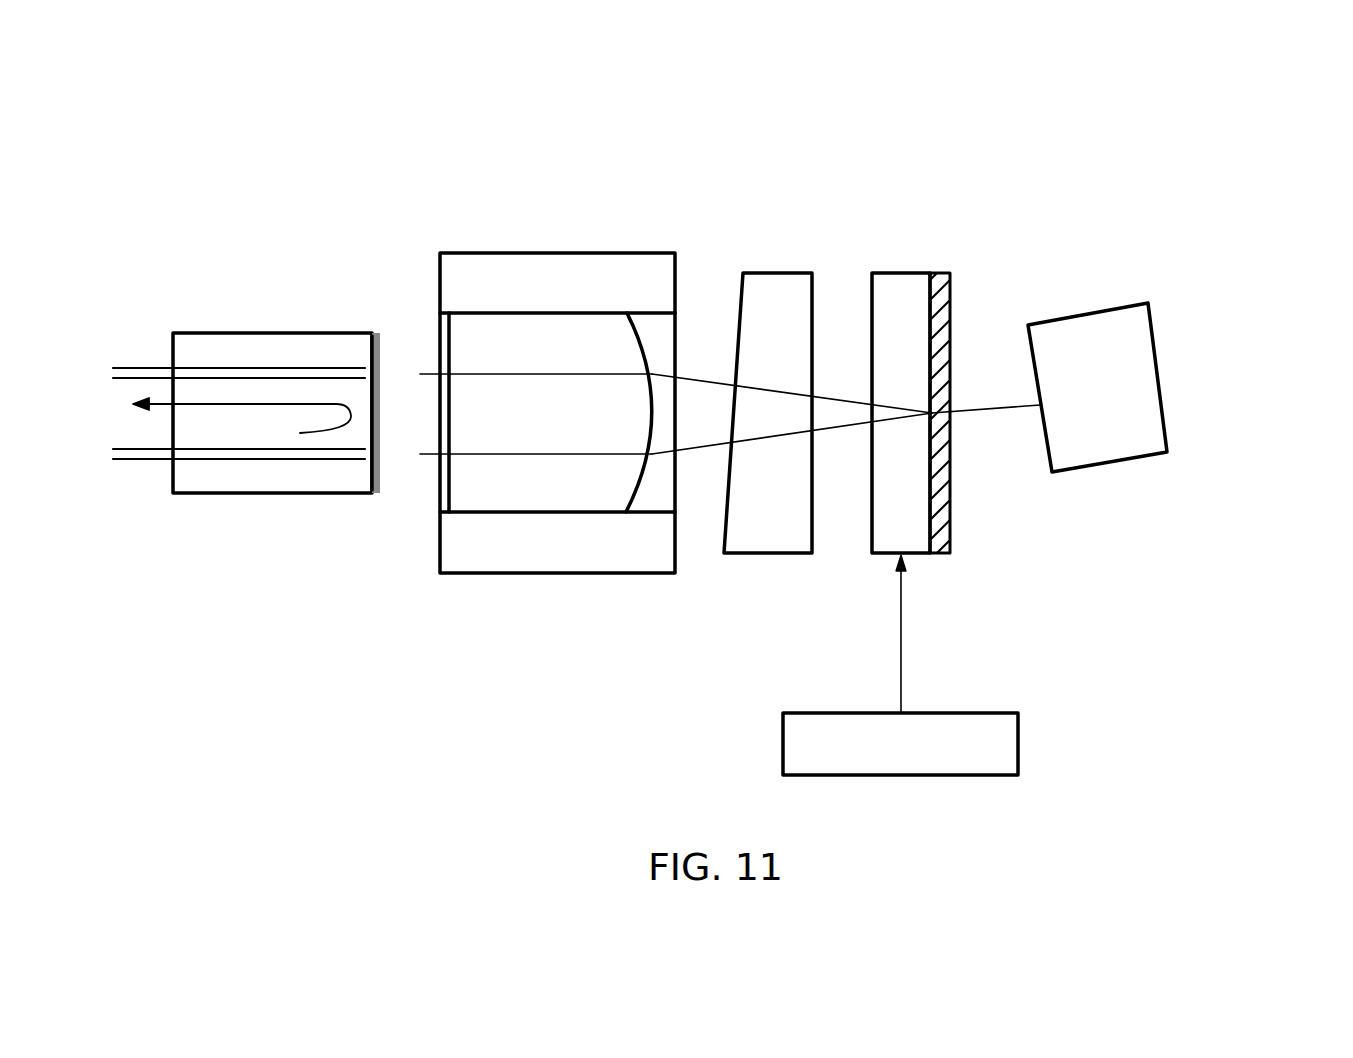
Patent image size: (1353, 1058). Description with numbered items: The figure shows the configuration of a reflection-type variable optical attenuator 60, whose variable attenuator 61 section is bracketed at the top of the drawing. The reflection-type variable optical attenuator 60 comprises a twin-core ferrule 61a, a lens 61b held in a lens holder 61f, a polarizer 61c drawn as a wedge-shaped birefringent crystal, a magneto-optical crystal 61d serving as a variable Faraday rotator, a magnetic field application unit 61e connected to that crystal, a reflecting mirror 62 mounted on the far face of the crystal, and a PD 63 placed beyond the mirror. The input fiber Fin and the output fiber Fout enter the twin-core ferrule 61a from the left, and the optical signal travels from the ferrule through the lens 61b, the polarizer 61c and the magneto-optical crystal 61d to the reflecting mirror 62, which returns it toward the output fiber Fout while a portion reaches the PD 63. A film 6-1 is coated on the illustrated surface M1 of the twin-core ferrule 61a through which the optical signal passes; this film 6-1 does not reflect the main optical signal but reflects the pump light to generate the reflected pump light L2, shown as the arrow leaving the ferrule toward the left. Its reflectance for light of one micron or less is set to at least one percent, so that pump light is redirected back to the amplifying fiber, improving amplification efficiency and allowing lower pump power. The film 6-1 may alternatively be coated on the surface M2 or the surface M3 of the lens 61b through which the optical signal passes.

The reflection-type variable optical attenuator 60 is at (786, 120).
The variable attenuator 61 is at (183, 207).
The twin-core ferrule 61a is at (200, 493).
The lens 61b is at (648, 365).
The polarizer 61c is at (763, 557).
The magneto-optical crystal 61d is at (918, 557).
The magnetic field application unit 61e is at (1018, 762).
The lens holder 61f is at (440, 573).
The reflecting mirror 62 is at (950, 291).
The PD 63 is at (1062, 474).
The film 6-1 is at (382, 466).
The output fiber Fout is at (135, 362).
The input fiber Fin is at (311, 462).
The reflected pump light L2 is at (158, 408).
The surface of the twin-core ferrule M1 is at (346, 333).
The surface of the lens M2 is at (437, 335).
The surface of the lens M3 is at (636, 323).